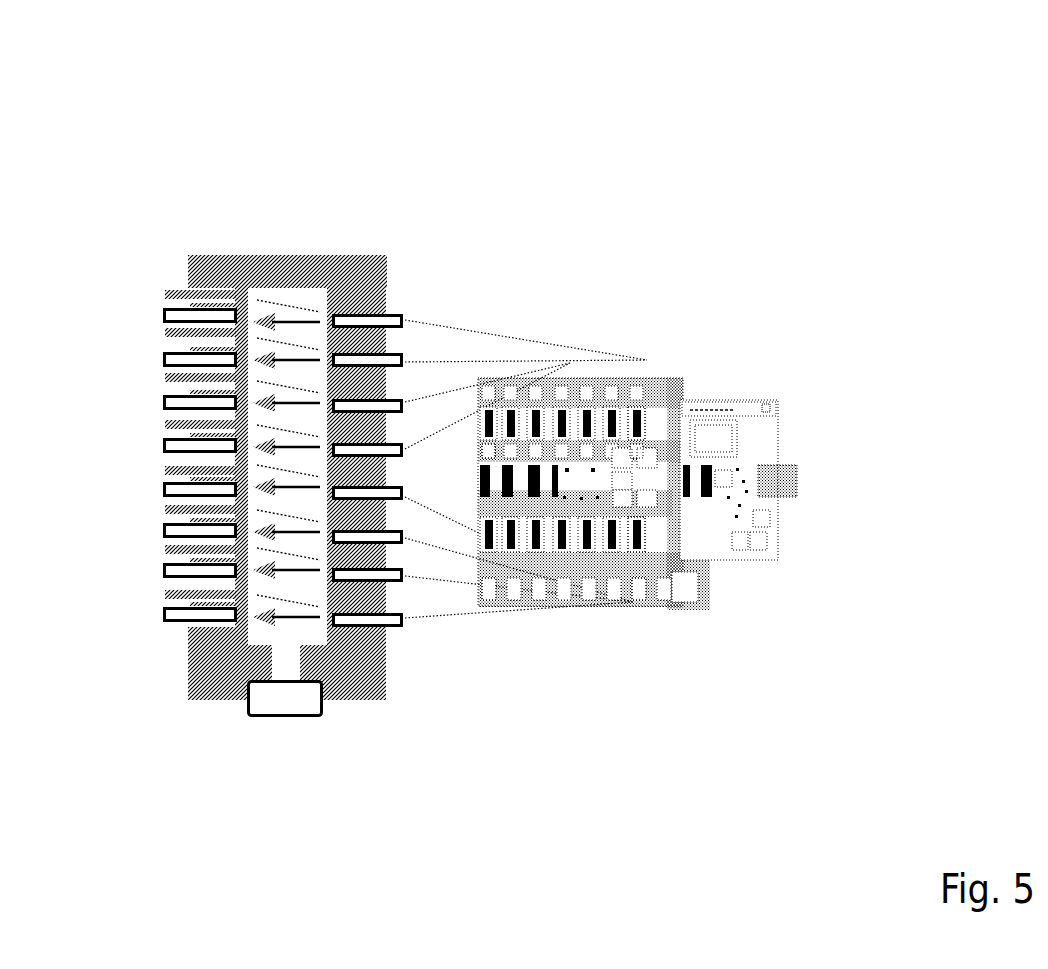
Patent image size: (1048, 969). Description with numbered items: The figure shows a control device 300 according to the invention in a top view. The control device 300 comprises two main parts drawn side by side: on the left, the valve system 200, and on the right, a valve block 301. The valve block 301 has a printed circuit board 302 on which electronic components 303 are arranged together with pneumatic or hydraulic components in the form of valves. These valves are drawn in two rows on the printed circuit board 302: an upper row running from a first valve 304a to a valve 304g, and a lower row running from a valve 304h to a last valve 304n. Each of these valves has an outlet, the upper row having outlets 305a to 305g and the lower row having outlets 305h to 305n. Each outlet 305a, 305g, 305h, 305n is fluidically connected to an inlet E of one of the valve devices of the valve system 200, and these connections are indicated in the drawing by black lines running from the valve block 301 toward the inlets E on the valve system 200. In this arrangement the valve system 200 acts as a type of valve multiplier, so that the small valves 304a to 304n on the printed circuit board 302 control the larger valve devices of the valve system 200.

The valve system 200 is at (232, 242).
The inlet E is at (400, 313).
The control device 300 is at (592, 374).
The valve block 301 is at (810, 394).
The printed circuit board 302 is at (780, 412).
The electronic components 303 is at (717, 443).
The valve 304a is at (490, 420).
The valve 304g is at (650, 420).
The valve 304h is at (490, 538).
The valve 304n is at (647, 537).
The outlet 305a is at (494, 358).
The outlet 305g is at (647, 360).
The outlet 305h is at (495, 600).
The outlet 305n is at (632, 601).